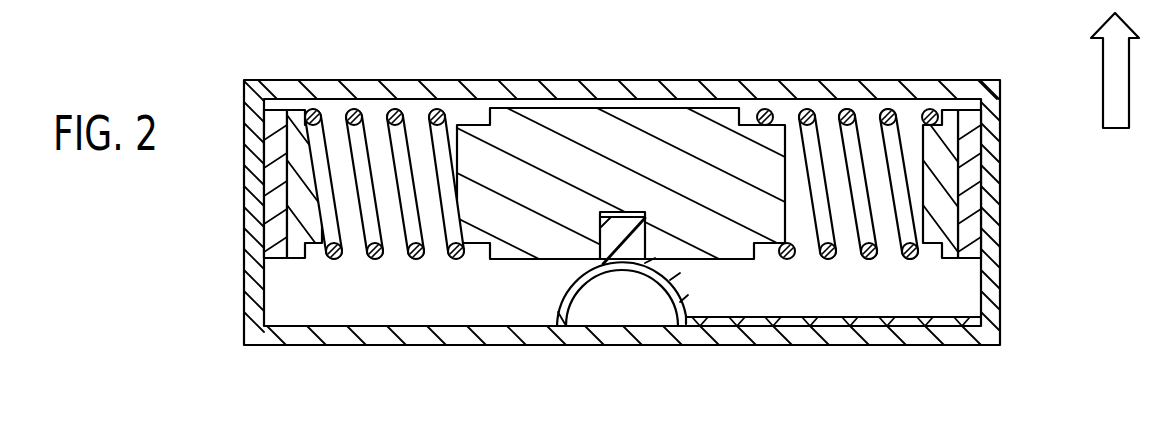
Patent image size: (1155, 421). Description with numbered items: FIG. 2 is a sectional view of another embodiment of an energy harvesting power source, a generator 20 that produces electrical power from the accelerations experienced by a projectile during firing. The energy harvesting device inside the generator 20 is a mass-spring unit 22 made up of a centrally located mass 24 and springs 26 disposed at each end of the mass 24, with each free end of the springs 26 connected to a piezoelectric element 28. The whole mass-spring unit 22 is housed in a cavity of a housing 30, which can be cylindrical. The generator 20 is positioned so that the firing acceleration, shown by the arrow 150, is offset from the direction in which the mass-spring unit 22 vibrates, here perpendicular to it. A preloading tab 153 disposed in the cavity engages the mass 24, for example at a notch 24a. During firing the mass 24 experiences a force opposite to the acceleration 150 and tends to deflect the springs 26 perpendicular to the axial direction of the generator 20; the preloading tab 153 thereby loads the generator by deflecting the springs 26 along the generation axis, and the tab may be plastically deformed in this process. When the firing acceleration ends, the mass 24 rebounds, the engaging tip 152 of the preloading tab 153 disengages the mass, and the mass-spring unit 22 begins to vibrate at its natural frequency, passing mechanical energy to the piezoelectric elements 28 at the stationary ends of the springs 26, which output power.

The generator 20 is at (187, 73).
The mass-spring unit 22 is at (953, 60).
The mass 24 is at (738, 259).
The notch 24a is at (628, 212).
The springs 26 is at (375, 258).
The piezoelectric element 28 is at (277, 258).
The housing 30 is at (1000, 223).
The firing acceleration 150 is at (1103, 80).
The engaging tip 152 is at (630, 250).
The preloading tab 153 is at (540, 293).